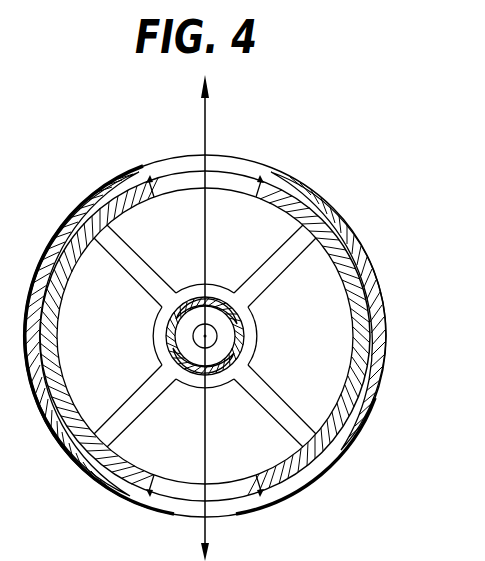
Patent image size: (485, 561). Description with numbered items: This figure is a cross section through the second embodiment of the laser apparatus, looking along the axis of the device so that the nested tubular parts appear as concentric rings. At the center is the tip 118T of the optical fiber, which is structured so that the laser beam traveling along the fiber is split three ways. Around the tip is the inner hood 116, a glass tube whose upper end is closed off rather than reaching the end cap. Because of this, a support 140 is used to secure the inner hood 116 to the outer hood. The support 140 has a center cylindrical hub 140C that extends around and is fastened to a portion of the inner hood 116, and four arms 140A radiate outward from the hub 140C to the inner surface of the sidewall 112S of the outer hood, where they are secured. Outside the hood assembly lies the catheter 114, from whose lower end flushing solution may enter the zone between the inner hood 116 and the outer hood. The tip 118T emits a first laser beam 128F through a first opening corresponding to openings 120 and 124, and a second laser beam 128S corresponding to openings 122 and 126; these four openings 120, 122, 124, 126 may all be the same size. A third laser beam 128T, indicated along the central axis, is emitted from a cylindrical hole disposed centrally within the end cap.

The sidewall 112S is at (350, 282).
The catheter 114 is at (355, 193).
The inner hood 116 is at (187, 305).
The tip 118T is at (176, 335).
The opening 120 is at (257, 482).
The opening 122 is at (150, 180).
The opening 124 is at (152, 514).
The opening 126 is at (261, 180).
The second laser beam 128S is at (205, 128).
The first laser beam 128F is at (218, 419).
The third laser beam 128T is at (127, 560).
The support 140 is at (287, 378).
The arms 140A is at (117, 262).
The center cylindrical hub 140C is at (258, 334).